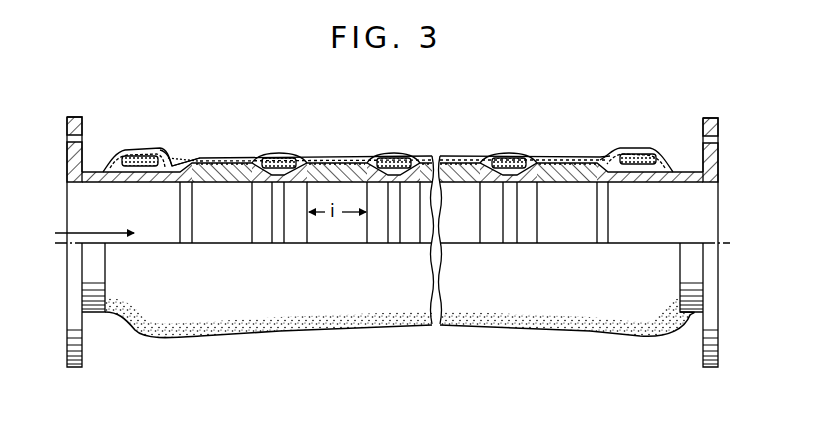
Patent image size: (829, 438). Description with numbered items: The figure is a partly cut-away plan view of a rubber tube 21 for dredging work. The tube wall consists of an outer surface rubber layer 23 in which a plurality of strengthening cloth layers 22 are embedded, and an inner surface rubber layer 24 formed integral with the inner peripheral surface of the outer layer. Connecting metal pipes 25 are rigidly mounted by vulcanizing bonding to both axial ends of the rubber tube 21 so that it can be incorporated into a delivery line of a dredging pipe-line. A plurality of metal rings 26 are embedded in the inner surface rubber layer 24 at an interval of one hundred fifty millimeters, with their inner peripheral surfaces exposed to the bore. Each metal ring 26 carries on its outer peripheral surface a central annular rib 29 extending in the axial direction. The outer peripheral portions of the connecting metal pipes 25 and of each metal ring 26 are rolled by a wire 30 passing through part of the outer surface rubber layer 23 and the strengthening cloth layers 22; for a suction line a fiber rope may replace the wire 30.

The rubber tube for dredging work 21 is at (203, 156).
The strengthening cloth layers 22 is at (169, 150).
The outer surface rubber layer 23 is at (446, 158).
The inner surface rubber layer 24 is at (326, 157).
The connecting metal pipes 25 is at (67, 117).
The metal rings 26 is at (262, 233).
The annular rib 29 is at (280, 155).
The wire 30 is at (138, 152).